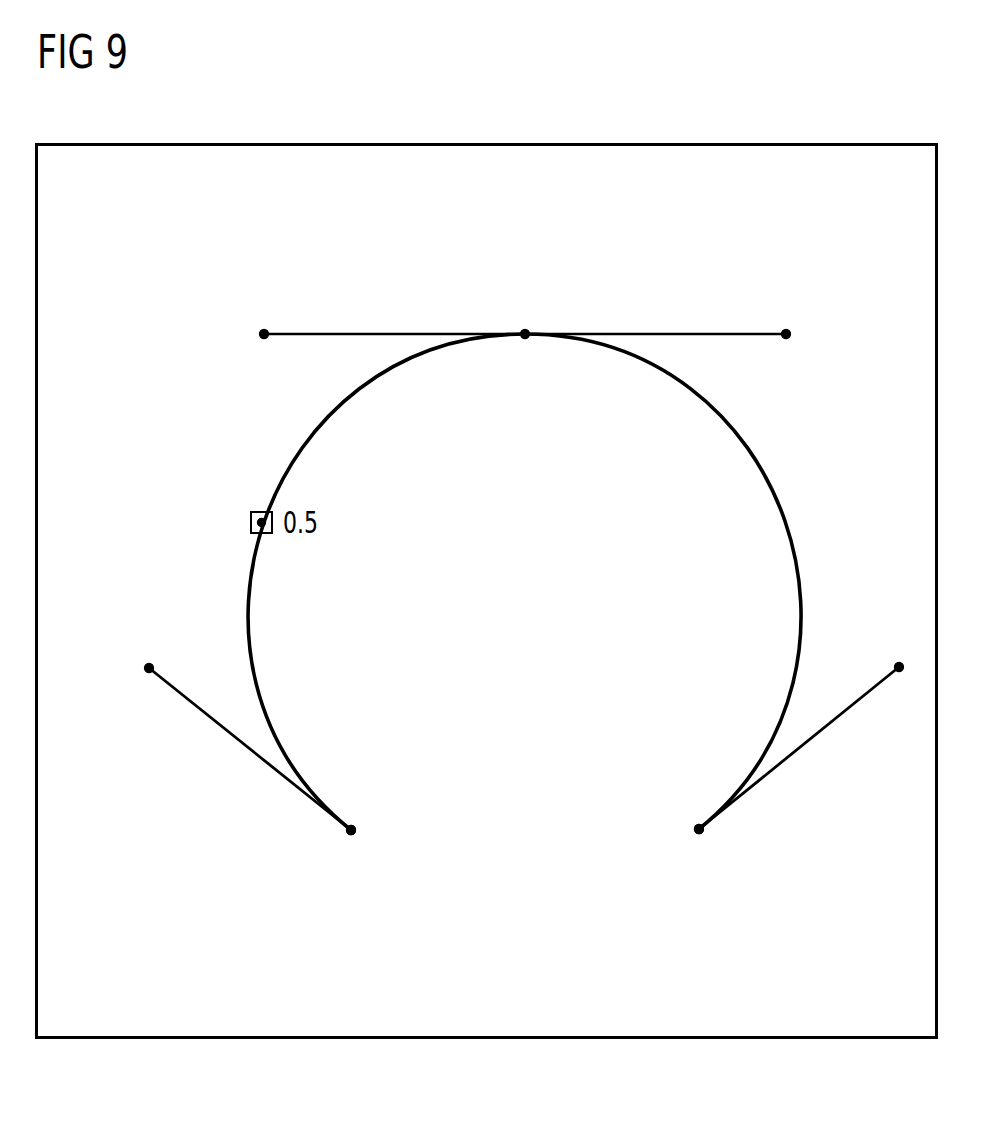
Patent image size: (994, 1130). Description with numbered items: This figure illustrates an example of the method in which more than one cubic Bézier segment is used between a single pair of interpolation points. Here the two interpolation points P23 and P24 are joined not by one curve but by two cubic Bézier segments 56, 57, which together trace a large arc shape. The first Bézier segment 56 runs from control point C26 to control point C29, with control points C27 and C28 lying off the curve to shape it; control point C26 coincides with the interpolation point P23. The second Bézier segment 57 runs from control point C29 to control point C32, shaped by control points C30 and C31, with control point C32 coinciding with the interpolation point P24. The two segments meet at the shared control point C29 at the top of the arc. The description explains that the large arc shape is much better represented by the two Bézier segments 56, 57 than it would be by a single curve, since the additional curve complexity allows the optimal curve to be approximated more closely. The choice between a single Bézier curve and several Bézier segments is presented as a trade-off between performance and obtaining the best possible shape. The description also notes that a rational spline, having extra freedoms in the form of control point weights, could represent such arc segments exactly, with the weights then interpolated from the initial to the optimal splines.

The Bézier segment 56 is at (247, 613).
The Bézier segment 57 is at (804, 612).
The control point C26 is at (352, 809).
The control point C27 is at (151, 653).
The control point C28 is at (264, 316).
The control point C29 is at (524, 316).
The control point C30 is at (786, 316).
The control point C31 is at (901, 652).
The control point C32 is at (693, 808).
The interpolation point P23 is at (351, 852).
The interpolation point P24 is at (698, 850).